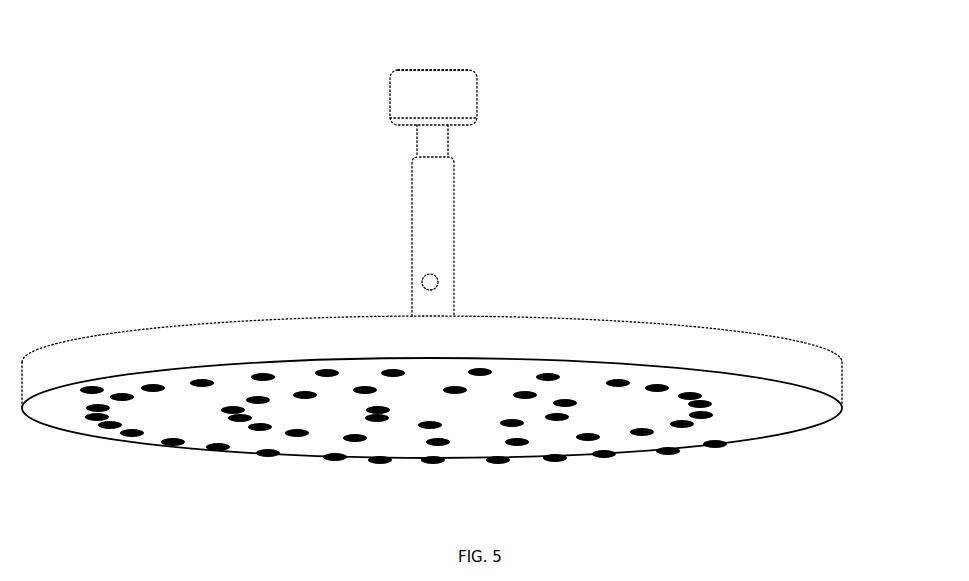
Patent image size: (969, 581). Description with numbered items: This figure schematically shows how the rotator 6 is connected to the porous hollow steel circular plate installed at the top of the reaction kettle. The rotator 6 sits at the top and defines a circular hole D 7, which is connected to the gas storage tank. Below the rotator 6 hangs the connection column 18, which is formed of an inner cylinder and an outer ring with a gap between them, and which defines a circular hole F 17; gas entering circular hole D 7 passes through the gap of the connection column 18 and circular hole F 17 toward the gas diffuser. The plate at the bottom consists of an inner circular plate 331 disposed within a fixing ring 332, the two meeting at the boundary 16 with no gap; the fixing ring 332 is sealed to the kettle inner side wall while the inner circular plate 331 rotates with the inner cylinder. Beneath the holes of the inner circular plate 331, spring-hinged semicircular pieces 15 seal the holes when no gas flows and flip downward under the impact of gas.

The rotator 6 is at (478, 93).
The circular hole D 7 is at (430, 70).
The connection column 18 is at (447, 145).
The circular hole F 17 is at (441, 280).
The boundary between inner circular plate and fixing ring 16 is at (838, 408).
The fixing ring 332 is at (790, 360).
The inner circular plate 331 is at (753, 413).
The semicircular piece 15 is at (620, 380).